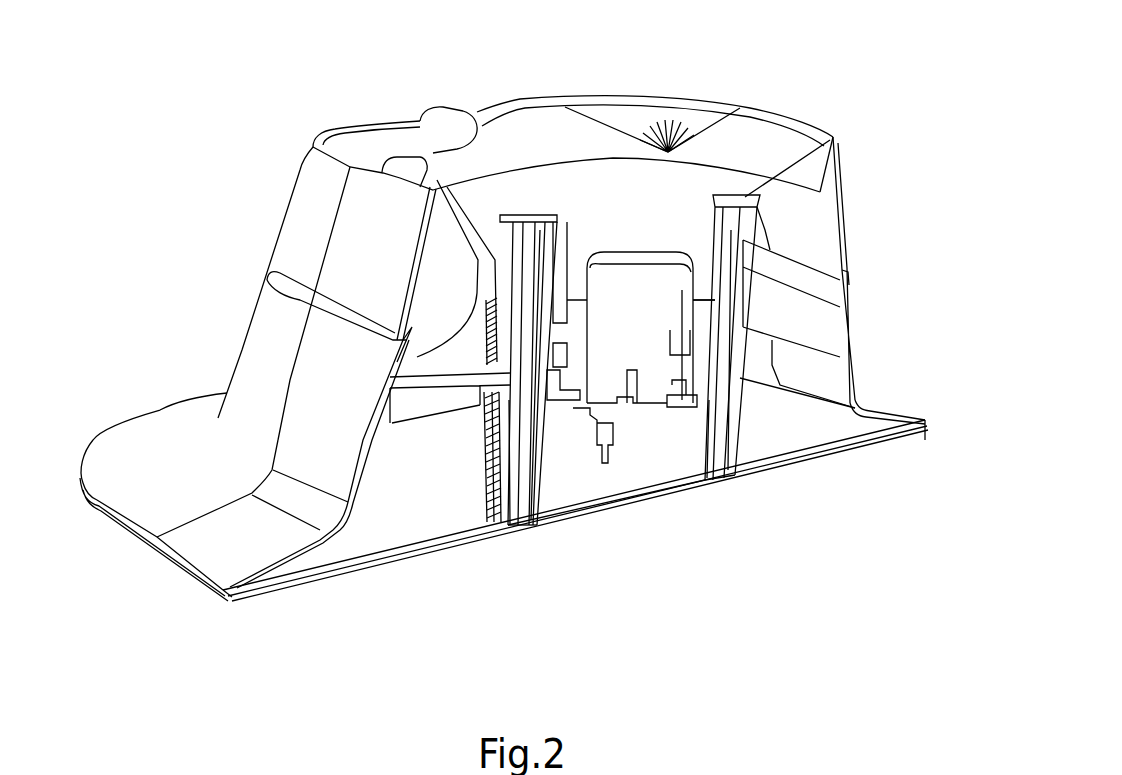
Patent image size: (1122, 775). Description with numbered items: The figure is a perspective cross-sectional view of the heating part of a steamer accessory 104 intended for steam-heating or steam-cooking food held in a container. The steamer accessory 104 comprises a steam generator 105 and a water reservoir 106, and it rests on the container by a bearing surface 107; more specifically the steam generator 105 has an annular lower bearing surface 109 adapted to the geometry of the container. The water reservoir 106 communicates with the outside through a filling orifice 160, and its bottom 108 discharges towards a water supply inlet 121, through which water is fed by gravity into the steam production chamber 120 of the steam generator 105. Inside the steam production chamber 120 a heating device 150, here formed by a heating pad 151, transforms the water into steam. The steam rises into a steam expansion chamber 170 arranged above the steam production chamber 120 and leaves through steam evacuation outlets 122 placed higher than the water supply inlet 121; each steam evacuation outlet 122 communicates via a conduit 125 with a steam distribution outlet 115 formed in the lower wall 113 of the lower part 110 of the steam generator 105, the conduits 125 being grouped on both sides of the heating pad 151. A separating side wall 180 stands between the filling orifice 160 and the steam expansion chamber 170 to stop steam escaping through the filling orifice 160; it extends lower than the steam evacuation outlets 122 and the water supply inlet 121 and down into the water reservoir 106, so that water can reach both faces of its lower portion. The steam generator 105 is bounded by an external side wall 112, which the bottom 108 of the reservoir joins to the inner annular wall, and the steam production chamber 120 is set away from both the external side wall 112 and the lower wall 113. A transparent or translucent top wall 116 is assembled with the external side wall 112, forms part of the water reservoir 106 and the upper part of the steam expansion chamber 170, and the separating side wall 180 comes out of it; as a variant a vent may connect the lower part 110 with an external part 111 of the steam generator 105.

The steamer accessory 104 is at (190, 362).
The steam generator 105 is at (711, 296).
The water reservoir 106 is at (486, 348).
The bearing surface 107 is at (241, 592).
The bottom 108 is at (784, 303).
The annular lower bearing surface 109 is at (925, 436).
The lower part 110 is at (839, 462).
The external part 111 is at (183, 438).
The external side wall 112 is at (320, 430).
The lower wall 113 is at (615, 497).
The steam distribution outlet 115 is at (522, 522).
The top wall 116 is at (310, 193).
The steam production chamber 120 is at (697, 272).
The water supply inlet 121 is at (562, 302).
The steam evacuation outlet 122 is at (538, 223).
The conduit 125 is at (523, 423).
The heating device 150 is at (650, 233).
The heating pad 151 is at (627, 288).
The filling orifice 160 is at (355, 148).
The steam expansion chamber 170 is at (640, 245).
The separating side wall 180 is at (418, 305).